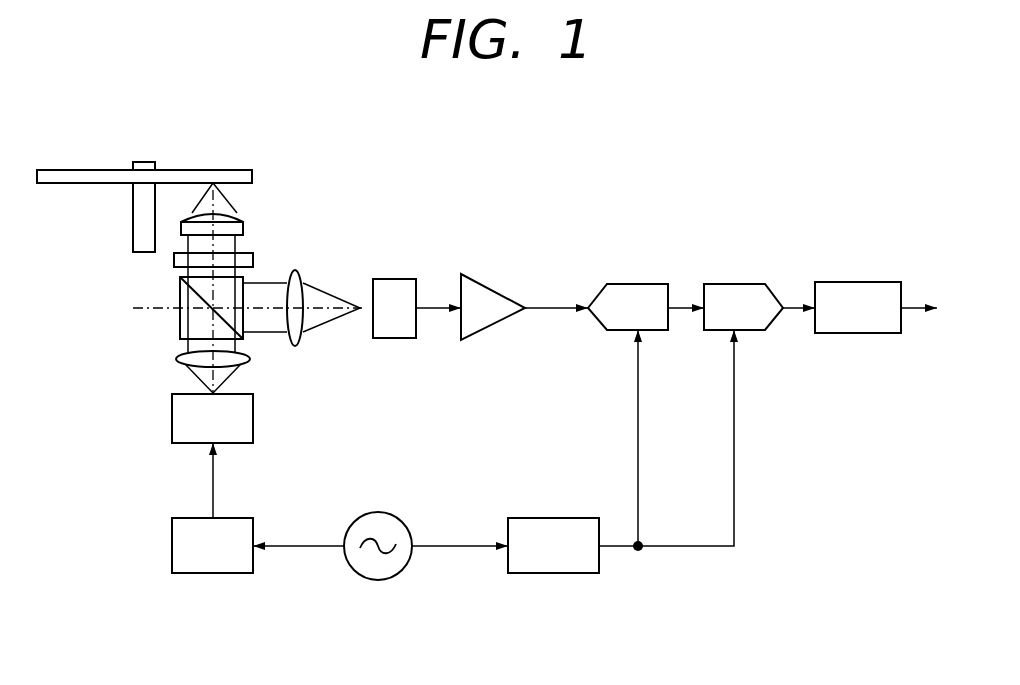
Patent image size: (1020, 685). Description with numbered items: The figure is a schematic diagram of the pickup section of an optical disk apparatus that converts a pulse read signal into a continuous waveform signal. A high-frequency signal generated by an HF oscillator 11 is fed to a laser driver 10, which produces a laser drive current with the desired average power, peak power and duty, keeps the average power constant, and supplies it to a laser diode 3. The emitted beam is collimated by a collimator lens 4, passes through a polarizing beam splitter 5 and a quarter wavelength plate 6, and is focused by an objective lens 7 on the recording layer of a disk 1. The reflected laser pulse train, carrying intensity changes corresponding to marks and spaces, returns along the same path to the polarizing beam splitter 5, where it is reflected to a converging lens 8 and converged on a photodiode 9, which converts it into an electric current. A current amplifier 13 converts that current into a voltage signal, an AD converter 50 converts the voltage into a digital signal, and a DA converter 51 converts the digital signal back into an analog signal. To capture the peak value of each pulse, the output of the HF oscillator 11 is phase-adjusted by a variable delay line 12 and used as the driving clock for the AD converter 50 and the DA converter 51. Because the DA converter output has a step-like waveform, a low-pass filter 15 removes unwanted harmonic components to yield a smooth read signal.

The disk 1 is at (85, 173).
The laser diode 3 is at (182, 413).
The collimator lens 4 is at (182, 358).
The polarizing beam splitter 5 is at (192, 323).
The quarter wavelength plate 6 is at (235, 262).
The objective lens 7 is at (238, 220).
The converging lens 8 is at (297, 338).
The photodiode 9 is at (397, 278).
The laser driver 10 is at (182, 538).
The HF oscillator 11 is at (400, 580).
The variable delay line 12 is at (582, 575).
The current amplifier 13 is at (497, 283).
The low-pass filter 15 is at (868, 281).
The AD converter 50 is at (647, 283).
The DA converter 51 is at (752, 283).